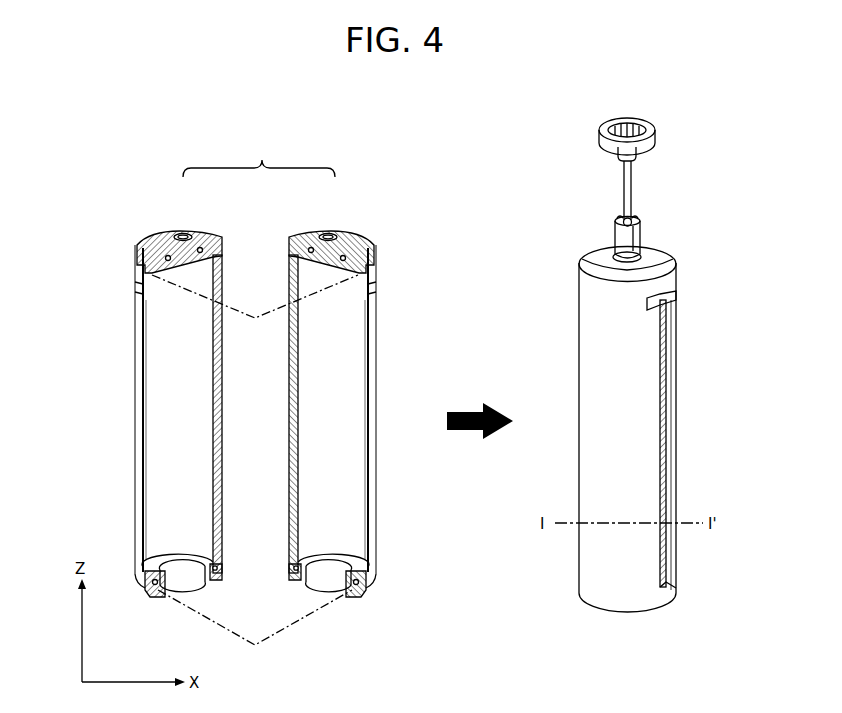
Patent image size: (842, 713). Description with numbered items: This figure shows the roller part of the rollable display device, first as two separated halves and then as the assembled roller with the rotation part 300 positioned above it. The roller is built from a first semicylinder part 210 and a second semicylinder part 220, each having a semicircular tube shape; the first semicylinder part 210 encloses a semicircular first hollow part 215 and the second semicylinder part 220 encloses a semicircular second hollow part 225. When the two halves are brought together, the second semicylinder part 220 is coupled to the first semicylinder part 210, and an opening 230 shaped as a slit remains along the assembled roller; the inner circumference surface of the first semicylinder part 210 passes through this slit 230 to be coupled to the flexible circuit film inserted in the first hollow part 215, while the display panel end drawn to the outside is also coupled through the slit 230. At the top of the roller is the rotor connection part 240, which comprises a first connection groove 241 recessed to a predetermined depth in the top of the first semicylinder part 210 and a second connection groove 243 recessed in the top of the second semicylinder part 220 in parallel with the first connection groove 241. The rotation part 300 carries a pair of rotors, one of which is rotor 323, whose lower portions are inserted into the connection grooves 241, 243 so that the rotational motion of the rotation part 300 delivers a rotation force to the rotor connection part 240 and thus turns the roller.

The first semicylinder part 210 is at (135, 415).
The first hollow part 215 is at (184, 330).
The second semicylinder part 220 is at (377, 481).
The second hollow part 225 is at (337, 340).
The opening 230 is at (661, 462).
The rotor connection part 240 is at (429, 225).
The first connection groove 241 is at (182, 236).
The second connection groove 243 is at (333, 236).
The rotation part 300 is at (640, 188).
The rotor 323 is at (613, 236).